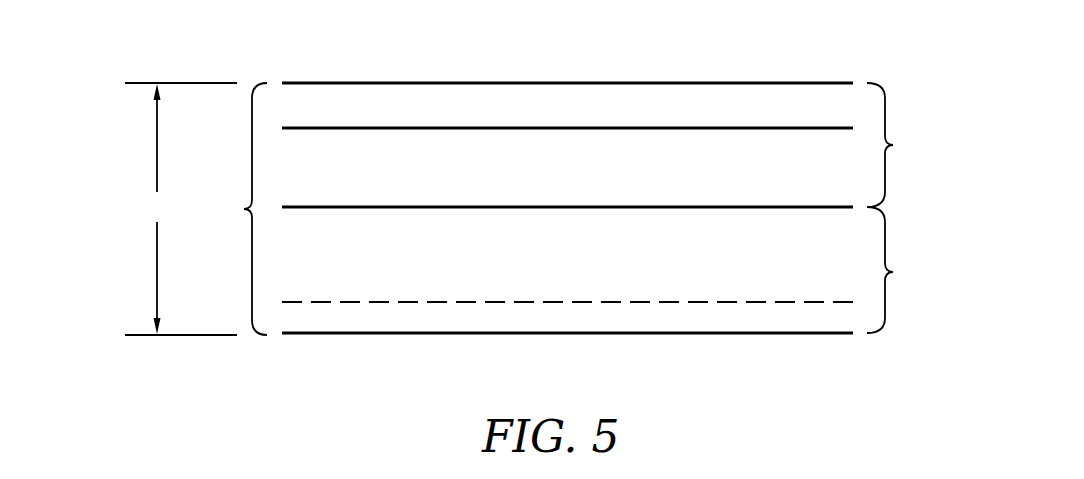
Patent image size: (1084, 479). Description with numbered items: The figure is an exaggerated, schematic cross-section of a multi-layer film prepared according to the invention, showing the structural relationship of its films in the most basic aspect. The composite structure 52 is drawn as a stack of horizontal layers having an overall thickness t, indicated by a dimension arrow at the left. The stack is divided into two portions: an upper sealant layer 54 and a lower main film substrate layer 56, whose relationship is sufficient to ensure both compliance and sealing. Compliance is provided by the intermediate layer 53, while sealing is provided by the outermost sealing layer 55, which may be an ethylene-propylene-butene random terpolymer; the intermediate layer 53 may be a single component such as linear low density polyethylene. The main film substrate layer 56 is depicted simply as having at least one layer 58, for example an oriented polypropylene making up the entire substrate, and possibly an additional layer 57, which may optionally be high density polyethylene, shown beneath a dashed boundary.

The composite structure 52 is at (244, 209).
The intermediate layer 53 is at (653, 162).
The sealant layer 54 is at (893, 145).
The sealing layer 55 is at (582, 110).
The main film substrate layer 56 is at (893, 272).
The additional layer 57 is at (540, 318).
The layer 58 is at (725, 270).
The thickness t is at (181, 209).